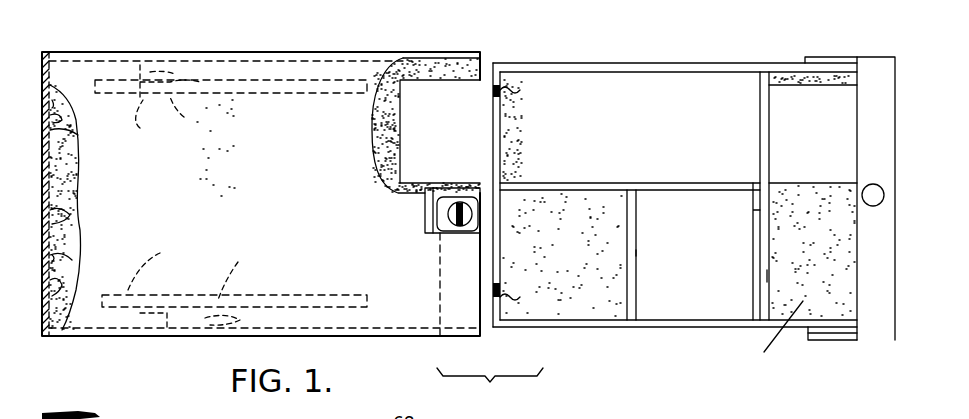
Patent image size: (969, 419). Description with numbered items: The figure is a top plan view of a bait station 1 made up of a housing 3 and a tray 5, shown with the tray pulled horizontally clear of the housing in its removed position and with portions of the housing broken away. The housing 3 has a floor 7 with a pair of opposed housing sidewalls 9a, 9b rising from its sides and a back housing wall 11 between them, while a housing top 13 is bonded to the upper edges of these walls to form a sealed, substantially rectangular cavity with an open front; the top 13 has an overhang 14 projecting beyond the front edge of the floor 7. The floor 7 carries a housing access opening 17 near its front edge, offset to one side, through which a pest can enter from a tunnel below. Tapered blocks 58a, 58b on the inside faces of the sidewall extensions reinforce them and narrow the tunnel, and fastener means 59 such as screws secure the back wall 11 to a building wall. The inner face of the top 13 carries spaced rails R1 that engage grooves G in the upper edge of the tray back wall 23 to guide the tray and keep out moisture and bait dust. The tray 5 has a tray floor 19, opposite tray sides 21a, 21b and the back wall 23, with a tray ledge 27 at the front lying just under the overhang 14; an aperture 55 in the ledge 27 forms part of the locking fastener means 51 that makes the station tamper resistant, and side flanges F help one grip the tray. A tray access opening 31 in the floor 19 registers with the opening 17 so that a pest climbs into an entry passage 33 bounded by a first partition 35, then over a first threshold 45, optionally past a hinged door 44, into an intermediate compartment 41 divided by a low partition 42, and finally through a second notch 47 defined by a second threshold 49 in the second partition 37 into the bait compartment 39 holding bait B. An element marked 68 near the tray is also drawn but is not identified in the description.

The bait station 1 is at (378, 40).
The housing 3 is at (334, 48).
The tray 5 is at (423, 195).
The housing floor 7 is at (386, 116).
The housing sidewall 9a is at (229, 52).
The housing sidewall 9b is at (208, 338).
The back housing wall 11 is at (88, 228).
The housing top 13 is at (343, 286).
The overhang 14 is at (453, 303).
The housing access opening 17 is at (436, 104).
The tray floor 19 is at (764, 352).
The tray side 21a is at (620, 63).
The tray side 21b is at (613, 328).
The tray back wall 23 is at (502, 282).
The tray ledge 27 is at (878, 330).
The tray access opening 31 is at (823, 160).
The entry passage 33 is at (816, 246).
The first partition 35 is at (760, 153).
The second partition 37 is at (653, 193).
The bait compartment 39 is at (681, 160).
The intermediate compartment 41 is at (704, 280).
The low partition 42 is at (637, 250).
The hinged door 44 is at (753, 287).
The first threshold 45 is at (767, 276).
The second notch 47 is at (627, 186).
The second threshold 49 is at (559, 192).
The locking fastener means 51 is at (445, 240).
The aperture 55 is at (874, 184).
The tapered block 58a is at (154, 121).
The tapered block 58b is at (245, 271).
The fastener means 59 is at (78, 132).
The latch bracket 68 is at (430, 222).
The rails R1 is at (167, 193).
The bait B is at (718, 100).
The side flanges F is at (818, 57).
The grooves G is at (520, 194).